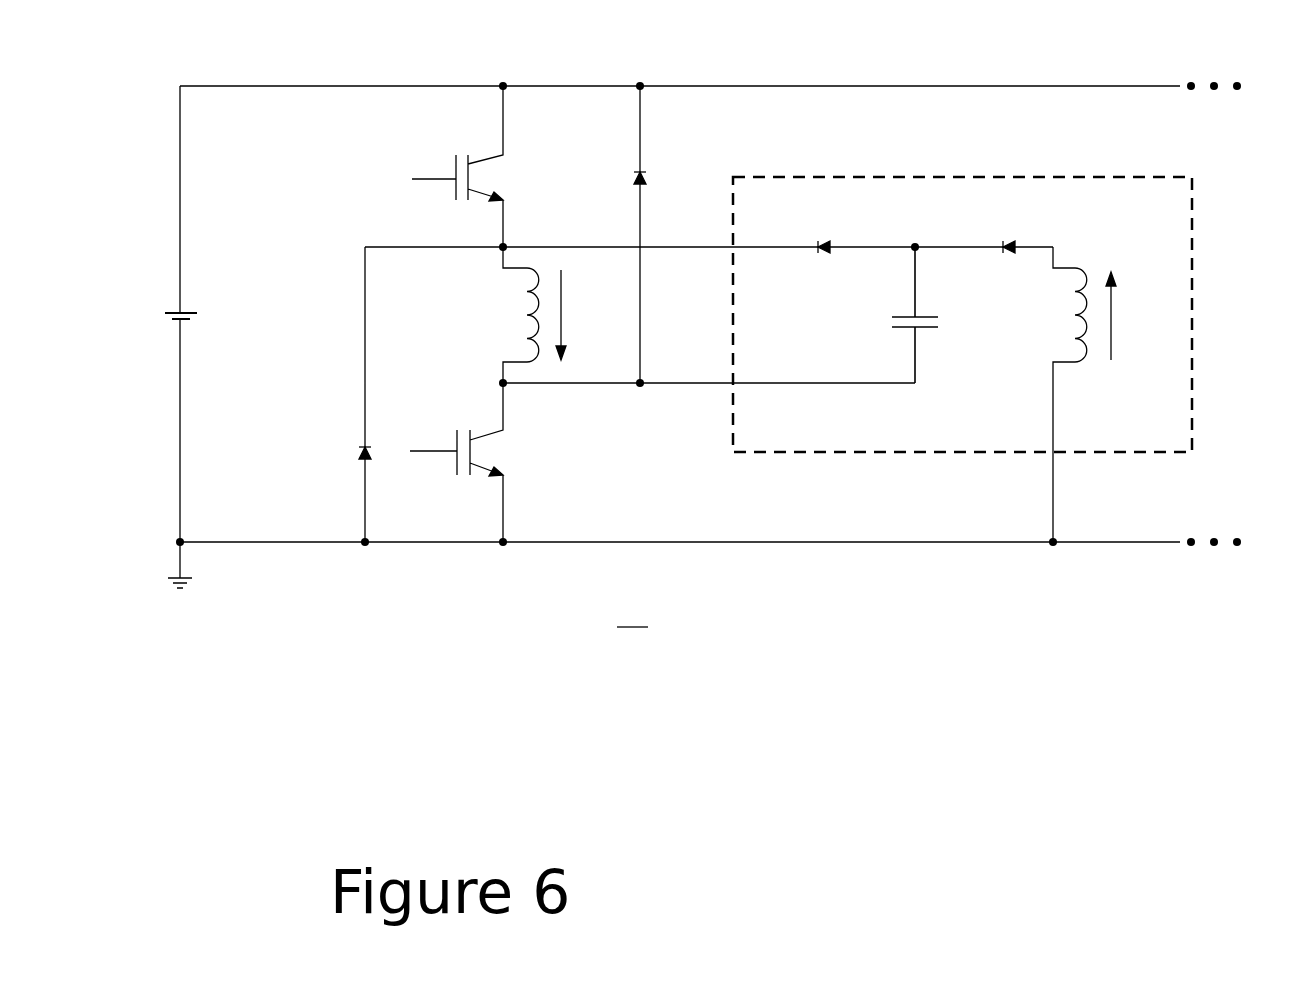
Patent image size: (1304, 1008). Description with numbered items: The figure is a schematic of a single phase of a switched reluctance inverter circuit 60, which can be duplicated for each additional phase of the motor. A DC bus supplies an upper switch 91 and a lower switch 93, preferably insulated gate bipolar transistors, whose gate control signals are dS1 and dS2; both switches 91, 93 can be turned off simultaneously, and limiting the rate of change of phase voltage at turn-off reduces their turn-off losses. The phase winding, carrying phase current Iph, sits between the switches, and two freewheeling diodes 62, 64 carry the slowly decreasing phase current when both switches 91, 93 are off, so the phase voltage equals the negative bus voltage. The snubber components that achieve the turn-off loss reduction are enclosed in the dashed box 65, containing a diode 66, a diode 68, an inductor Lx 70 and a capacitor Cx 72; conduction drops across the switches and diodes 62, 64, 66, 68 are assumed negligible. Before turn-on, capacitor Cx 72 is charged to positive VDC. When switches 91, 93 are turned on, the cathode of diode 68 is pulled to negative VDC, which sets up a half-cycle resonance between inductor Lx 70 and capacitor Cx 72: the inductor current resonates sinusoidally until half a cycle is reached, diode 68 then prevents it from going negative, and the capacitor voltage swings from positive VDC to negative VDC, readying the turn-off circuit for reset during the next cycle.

The SR inverter circuit 60 is at (676, 355).
The upper switch 91 is at (386, 182).
The lower switch 93 is at (449, 472).
The diode 62 is at (357, 425).
The diode 64 is at (643, 170).
The dashed box 65 is at (1192, 310).
The diode 66 is at (817, 256).
The diode 68 is at (1012, 258).
The inductor Lx 70 is at (1090, 366).
The capacitor Cx 72 is at (920, 335).